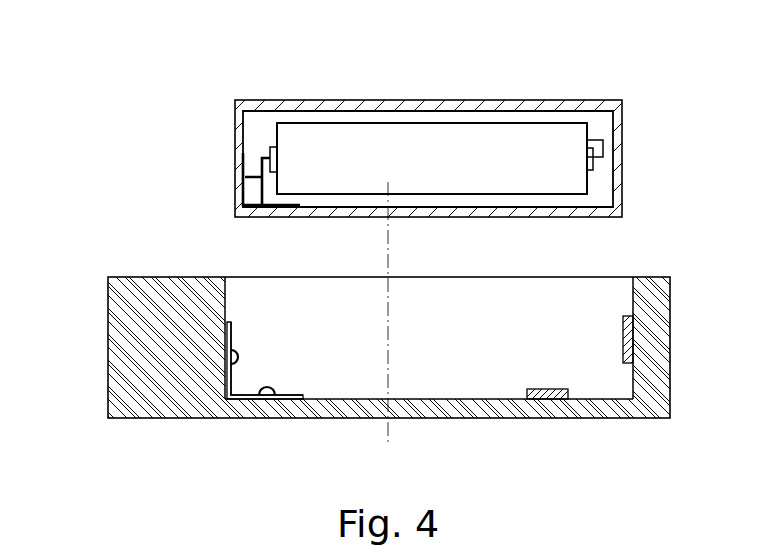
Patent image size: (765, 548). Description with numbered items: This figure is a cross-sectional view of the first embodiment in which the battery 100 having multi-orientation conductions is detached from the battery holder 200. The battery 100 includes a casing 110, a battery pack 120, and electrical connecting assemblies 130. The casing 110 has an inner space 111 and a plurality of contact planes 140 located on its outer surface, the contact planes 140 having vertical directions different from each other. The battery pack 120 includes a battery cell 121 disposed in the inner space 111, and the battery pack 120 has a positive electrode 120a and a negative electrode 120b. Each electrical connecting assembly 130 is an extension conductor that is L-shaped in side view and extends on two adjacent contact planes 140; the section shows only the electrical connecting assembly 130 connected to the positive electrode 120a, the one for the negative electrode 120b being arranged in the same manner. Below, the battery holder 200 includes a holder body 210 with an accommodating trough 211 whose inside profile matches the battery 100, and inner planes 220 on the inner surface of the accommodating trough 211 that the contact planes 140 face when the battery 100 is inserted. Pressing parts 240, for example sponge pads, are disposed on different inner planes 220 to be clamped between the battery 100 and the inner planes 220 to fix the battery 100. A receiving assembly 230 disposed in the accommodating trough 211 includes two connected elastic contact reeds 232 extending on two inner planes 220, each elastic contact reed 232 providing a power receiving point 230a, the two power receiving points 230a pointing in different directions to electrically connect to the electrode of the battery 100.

The battery 100 is at (641, 126).
The casing 110 is at (237, 126).
The inner space 111 is at (607, 198).
The battery pack 120 is at (373, 129).
The positive electrode 120a is at (270, 148).
The negative electrode 120b is at (594, 163).
The battery cell 121 is at (457, 137).
The electrical connecting assembly 130 is at (233, 208).
The contact plane 140 is at (233, 101).
The battery holder 200 is at (95, 312).
The holder body 210 is at (162, 276).
The accommodating trough 211 is at (507, 368).
The inner plane 220 is at (228, 307).
The receiving assembly 230 is at (235, 385).
The power receiving point 230a is at (239, 352).
The elastic contact reed 232 is at (231, 370).
The pressing part 240 is at (622, 340).